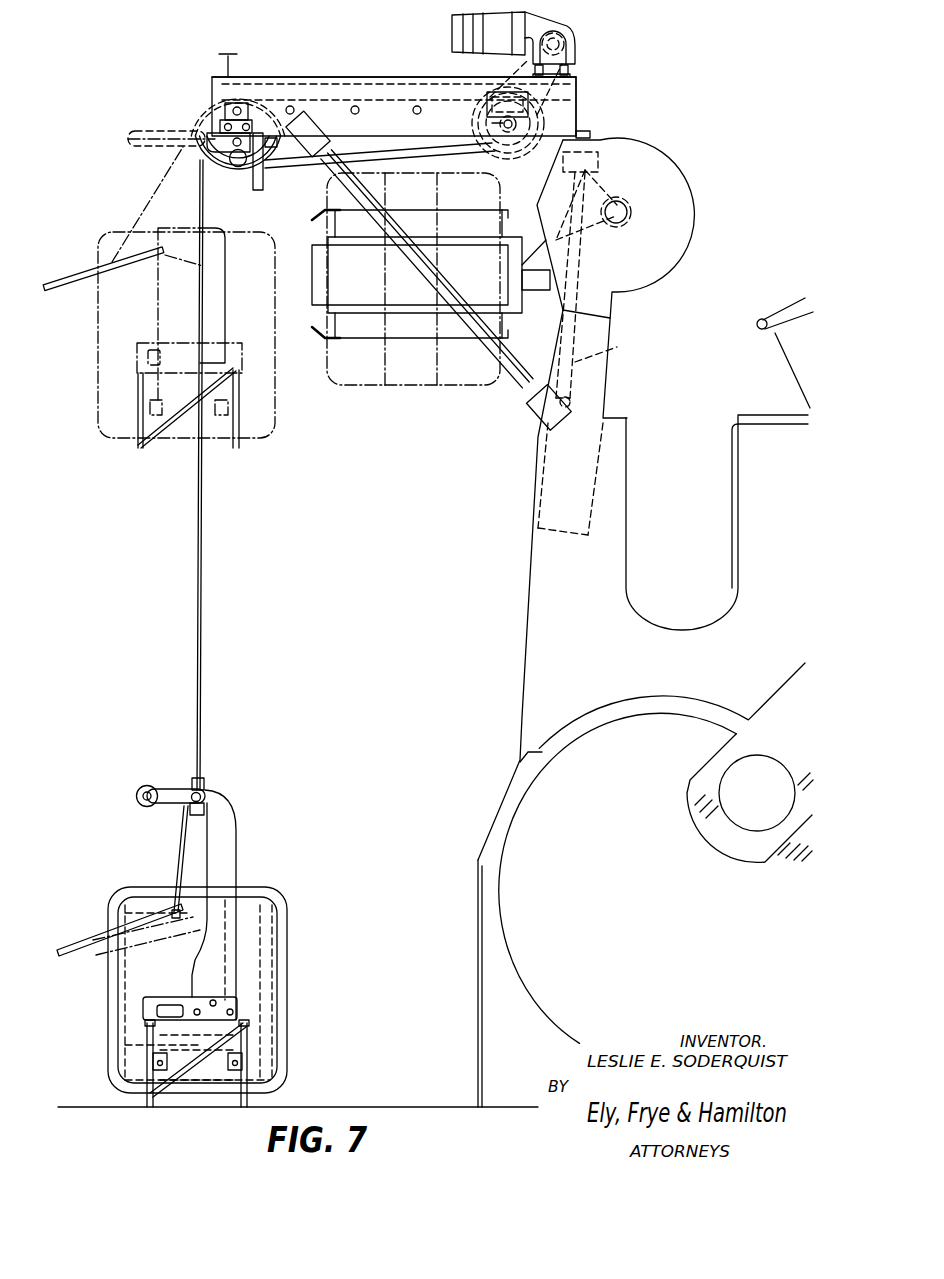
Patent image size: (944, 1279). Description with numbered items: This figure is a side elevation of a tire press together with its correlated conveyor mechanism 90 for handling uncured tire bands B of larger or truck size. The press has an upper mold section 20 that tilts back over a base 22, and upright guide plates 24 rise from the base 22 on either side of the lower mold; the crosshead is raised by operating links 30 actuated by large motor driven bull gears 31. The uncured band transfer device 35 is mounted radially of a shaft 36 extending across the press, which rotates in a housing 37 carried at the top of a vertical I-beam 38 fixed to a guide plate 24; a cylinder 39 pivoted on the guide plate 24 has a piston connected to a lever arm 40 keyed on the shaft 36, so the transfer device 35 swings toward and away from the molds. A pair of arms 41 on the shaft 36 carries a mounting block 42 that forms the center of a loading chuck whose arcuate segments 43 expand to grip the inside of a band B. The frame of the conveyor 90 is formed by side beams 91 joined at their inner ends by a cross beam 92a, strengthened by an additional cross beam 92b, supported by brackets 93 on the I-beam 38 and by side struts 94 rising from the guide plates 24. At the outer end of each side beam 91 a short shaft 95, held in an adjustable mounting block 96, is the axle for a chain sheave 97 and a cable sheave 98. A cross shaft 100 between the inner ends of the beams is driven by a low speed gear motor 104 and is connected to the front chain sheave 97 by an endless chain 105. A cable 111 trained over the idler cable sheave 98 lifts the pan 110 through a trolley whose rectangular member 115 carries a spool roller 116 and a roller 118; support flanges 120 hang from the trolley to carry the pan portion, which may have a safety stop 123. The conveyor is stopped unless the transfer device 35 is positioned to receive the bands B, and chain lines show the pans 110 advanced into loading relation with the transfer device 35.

The upper mold section 20 is at (793, 360).
The base 22 is at (486, 1079).
The guide plate 24 is at (535, 647).
The operating link 30 is at (689, 803).
The bull gear 31 is at (553, 1023).
The uncured band transfer device 35 is at (304, 323).
The shaft 36 is at (628, 211).
The housing 37 is at (677, 171).
The vertical I-beam 38 is at (604, 380).
The cylinder 39 is at (612, 348).
The lever arm 40 is at (606, 178).
The arm 41 is at (600, 240).
The mounting block 42 is at (539, 291).
The arcuate segment 43 is at (314, 212).
The conveyor mechanism 90 is at (375, 72).
The side beam 91 is at (300, 86).
The cross beam 92a is at (576, 107).
The additional cross beam 92b is at (220, 63).
The bracket 93 is at (605, 155).
The side strut 94 is at (523, 390).
The short shaft 95 is at (237, 167).
The adjustable mounting block 96 is at (239, 138).
The chain sheave 97 is at (205, 158).
The cable sheave 98 is at (217, 178).
The cross shaft 100 is at (508, 133).
The gear motor 104 is at (537, 24).
The endless chain 105 is at (415, 163).
The pan 110 is at (137, 432).
The cable 111 is at (203, 664).
The rectangular member 115 is at (163, 137).
The spool roller 116 is at (206, 786).
The roller 118 is at (140, 131).
The support flange 120 is at (207, 253).
The safety stop 123 is at (47, 285).
The band B is at (100, 338).